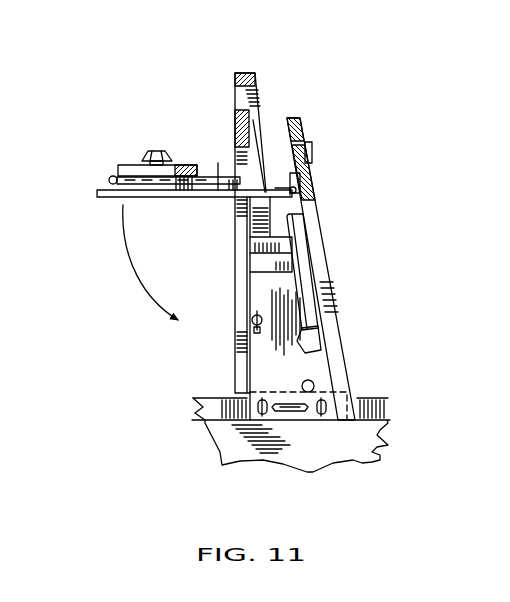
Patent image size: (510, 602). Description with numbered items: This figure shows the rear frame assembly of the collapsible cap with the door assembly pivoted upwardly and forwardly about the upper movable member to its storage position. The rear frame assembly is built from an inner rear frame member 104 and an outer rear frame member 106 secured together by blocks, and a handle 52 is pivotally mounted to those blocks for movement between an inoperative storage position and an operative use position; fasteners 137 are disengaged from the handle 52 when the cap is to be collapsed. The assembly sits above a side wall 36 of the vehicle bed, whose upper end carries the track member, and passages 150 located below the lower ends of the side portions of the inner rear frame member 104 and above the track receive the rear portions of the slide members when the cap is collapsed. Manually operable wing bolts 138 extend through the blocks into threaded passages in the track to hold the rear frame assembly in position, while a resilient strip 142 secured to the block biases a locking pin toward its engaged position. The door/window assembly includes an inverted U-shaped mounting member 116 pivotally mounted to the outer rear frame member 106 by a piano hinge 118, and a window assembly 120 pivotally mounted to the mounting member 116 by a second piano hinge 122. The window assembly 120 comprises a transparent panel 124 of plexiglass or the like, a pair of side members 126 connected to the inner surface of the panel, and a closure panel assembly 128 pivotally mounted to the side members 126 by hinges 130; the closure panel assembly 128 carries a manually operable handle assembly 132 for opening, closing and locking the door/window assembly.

The side wall 36 is at (389, 439).
The handle 52 is at (248, 72).
The inner rear frame member 104 is at (235, 112).
The outer rear frame member 106 is at (302, 128).
The mounting member 116 is at (314, 178).
The piano hinge 118 is at (316, 147).
The window assembly 120 is at (93, 199).
The piano hinge 122 is at (281, 182).
The transparent panel 124 is at (176, 198).
The side member 126 is at (218, 163).
The closure panel assembly 128 is at (115, 162).
The hinge 130 is at (108, 179).
The handle assembly 132 is at (152, 146).
The fastener 137 is at (272, 314).
The wing bolt 138 is at (257, 405).
The resilient strip 142 is at (281, 420).
The passage 150 is at (237, 395).